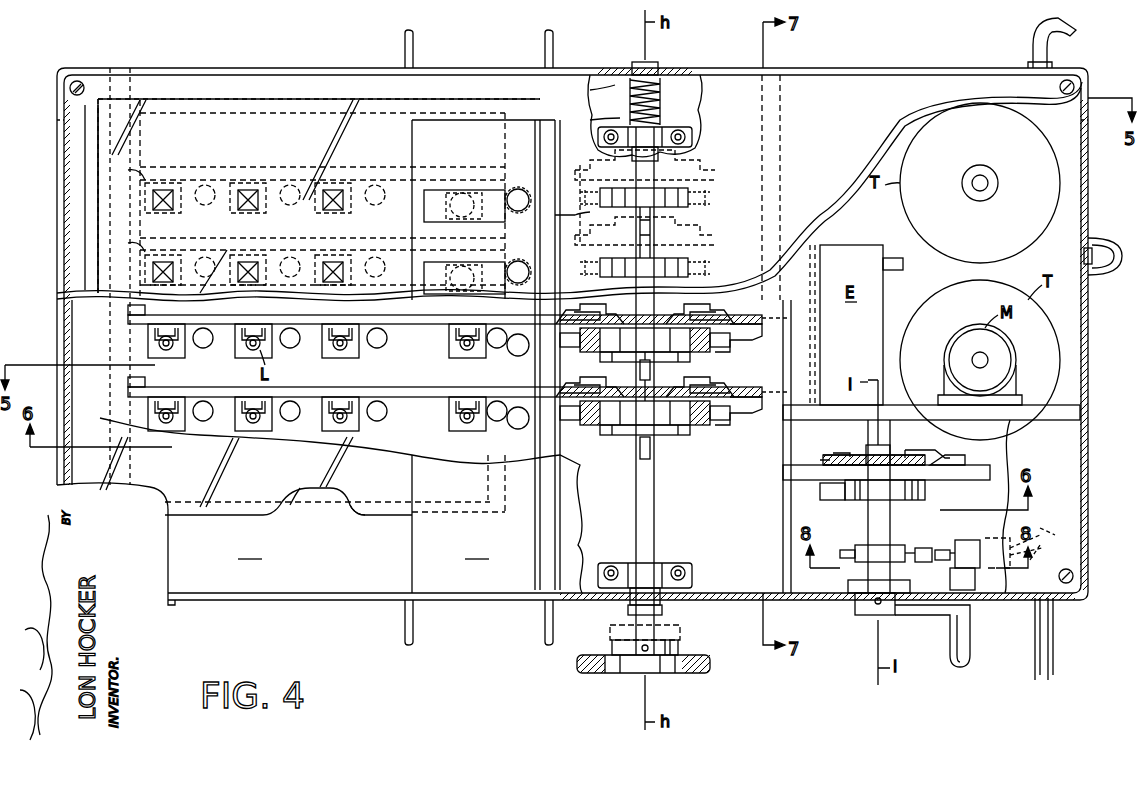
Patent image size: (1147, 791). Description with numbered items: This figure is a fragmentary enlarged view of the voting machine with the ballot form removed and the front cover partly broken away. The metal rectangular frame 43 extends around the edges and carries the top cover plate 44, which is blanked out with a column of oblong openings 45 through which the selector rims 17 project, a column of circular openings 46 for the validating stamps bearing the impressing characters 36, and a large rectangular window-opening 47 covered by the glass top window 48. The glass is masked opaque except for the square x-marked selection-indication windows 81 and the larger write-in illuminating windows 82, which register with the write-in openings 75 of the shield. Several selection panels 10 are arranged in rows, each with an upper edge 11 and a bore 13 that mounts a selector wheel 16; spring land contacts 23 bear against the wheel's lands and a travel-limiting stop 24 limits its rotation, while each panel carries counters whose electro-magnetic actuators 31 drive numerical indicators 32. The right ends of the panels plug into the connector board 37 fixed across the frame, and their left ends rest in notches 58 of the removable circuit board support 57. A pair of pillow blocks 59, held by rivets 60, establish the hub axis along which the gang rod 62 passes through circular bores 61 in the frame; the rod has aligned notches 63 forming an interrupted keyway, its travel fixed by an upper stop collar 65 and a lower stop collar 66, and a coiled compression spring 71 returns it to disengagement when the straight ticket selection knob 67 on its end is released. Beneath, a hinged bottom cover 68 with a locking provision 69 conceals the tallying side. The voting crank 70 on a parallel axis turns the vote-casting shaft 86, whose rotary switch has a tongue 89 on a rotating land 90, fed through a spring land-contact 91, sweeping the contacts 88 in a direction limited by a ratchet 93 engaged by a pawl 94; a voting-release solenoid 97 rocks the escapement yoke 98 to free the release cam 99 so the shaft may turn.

The selection panel 10 is at (128, 380).
The upper edge 11 is at (412, 325).
The bore 13 is at (556, 318).
The selector wheel 16 is at (712, 197).
The rim 17 is at (580, 343).
The land contact 23 is at (600, 310).
The travel-limiting stop 24 is at (612, 435).
The electro-magnetic actuator 31 is at (203, 348).
The numerical indicator 32 is at (170, 358).
The impressing character 36 is at (518, 211).
The connector board 37 is at (775, 512).
The rectangular frame 43 is at (252, 80).
The top cover plate 44 is at (335, 524).
The oblong opening 45 is at (680, 250).
The circular opening 46 is at (572, 215).
The window-opening 47 is at (290, 500).
The glass top window 48 is at (368, 518).
The circuit board support 57 is at (110, 350).
The notch 58 is at (128, 185).
The pillow block 59 is at (680, 130).
The rivet 60 is at (692, 140).
The circular bore 61 is at (660, 70).
The gang rod 62 is at (636, 503).
The notch 63 is at (648, 450).
The stop collar 65 is at (628, 125).
The stop collar 66 is at (628, 614).
The straight ticket selection knob 67 is at (597, 673).
The hinged bottom cover 68 is at (1090, 440).
The locking provision 69 is at (1086, 459).
The voting crank 70 is at (958, 667).
The coiled compression spring 71 is at (612, 93).
The write-in opening 75 is at (430, 228).
The selection-indication illuminated window 81 is at (325, 245).
The write-in illuminating window 82 is at (430, 205).
The vote-casting shaft 86 is at (890, 527).
The contact 88 is at (835, 455).
The vote-casting switch tongue 89 is at (860, 462).
The rotating land 90 is at (945, 458).
The spring land-contact 91 is at (925, 452).
The ratchet 93 is at (912, 498).
The pawl 94 is at (838, 500).
The voting-release solenoid 97 is at (965, 545).
The escapement yoke 98 is at (840, 558).
The release cam 99 is at (898, 562).